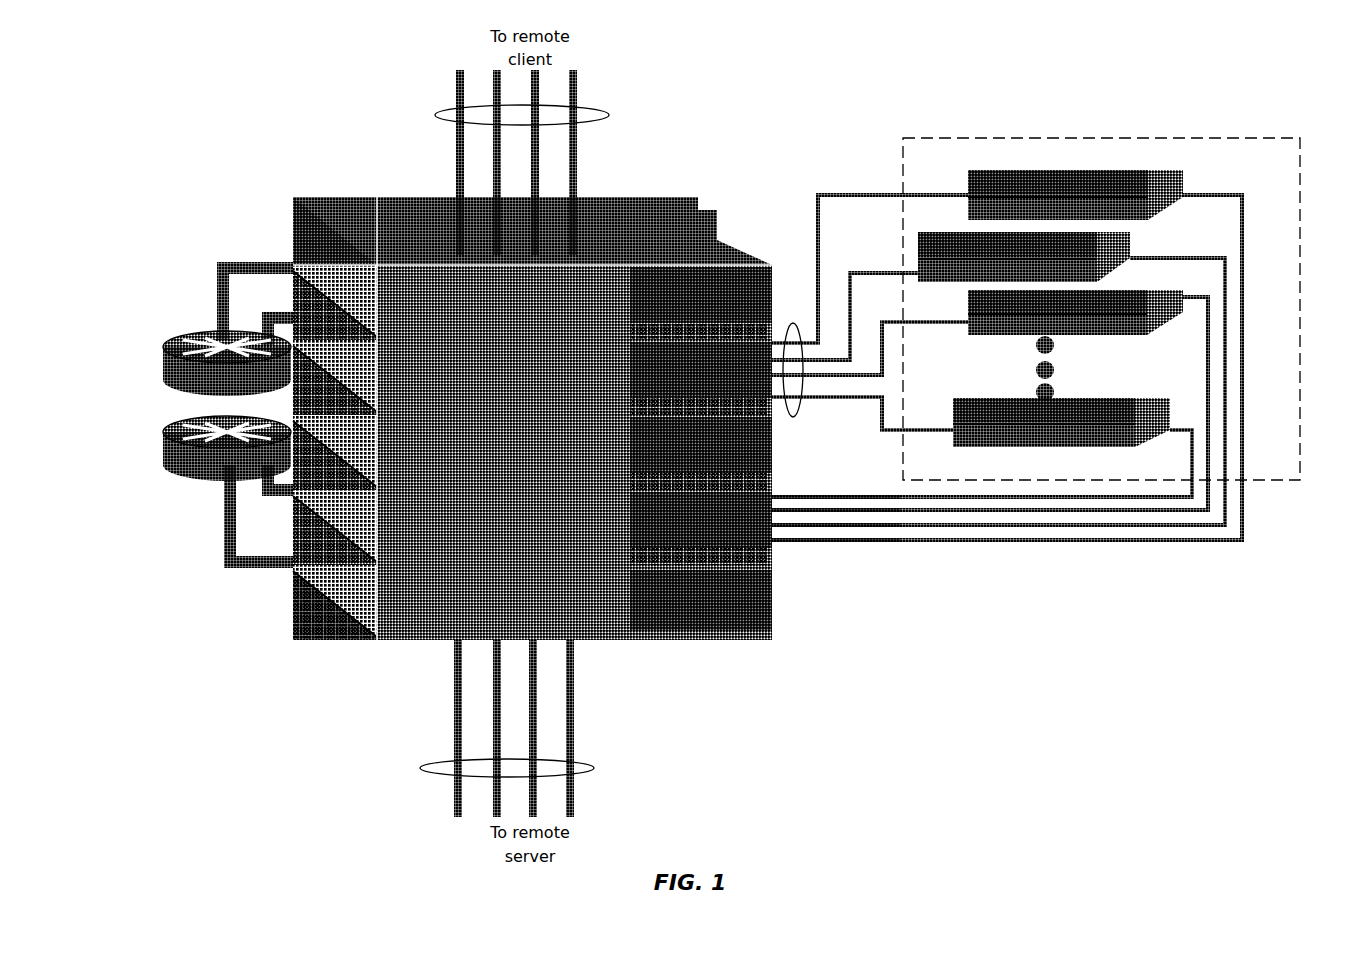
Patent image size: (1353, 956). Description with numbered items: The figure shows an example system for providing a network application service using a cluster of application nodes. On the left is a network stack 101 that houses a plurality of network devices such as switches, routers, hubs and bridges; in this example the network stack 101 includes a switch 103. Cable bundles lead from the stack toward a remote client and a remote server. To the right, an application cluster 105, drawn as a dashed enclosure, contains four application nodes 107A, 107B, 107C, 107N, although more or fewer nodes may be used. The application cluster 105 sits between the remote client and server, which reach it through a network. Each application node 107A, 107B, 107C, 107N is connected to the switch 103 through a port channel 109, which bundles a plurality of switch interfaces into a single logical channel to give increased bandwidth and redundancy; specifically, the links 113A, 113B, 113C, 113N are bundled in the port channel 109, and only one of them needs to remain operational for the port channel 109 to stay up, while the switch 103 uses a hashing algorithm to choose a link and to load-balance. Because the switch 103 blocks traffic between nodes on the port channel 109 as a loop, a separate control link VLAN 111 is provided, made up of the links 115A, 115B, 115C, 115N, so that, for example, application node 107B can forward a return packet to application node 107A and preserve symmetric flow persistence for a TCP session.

The network stack 101 is at (293, 218).
The switch 103 is at (1013, 781).
The application cluster 105 is at (1101, 309).
The application node 107A is at (997, 170).
The application node 107B is at (1048, 232).
The application node 107C is at (1010, 335).
The application node 107N is at (1100, 447).
The port channel 109 is at (793, 315).
The control link VLAN 111 is at (805, 520).
The link 113A is at (870, 259).
The link 113B is at (845, 306).
The link 113C is at (870, 337).
The link 113N is at (862, 413).
The link 115A is at (1007, 355).
The link 115B is at (998, 381).
The link 115C is at (997, 390).
The link 115N is at (991, 449).